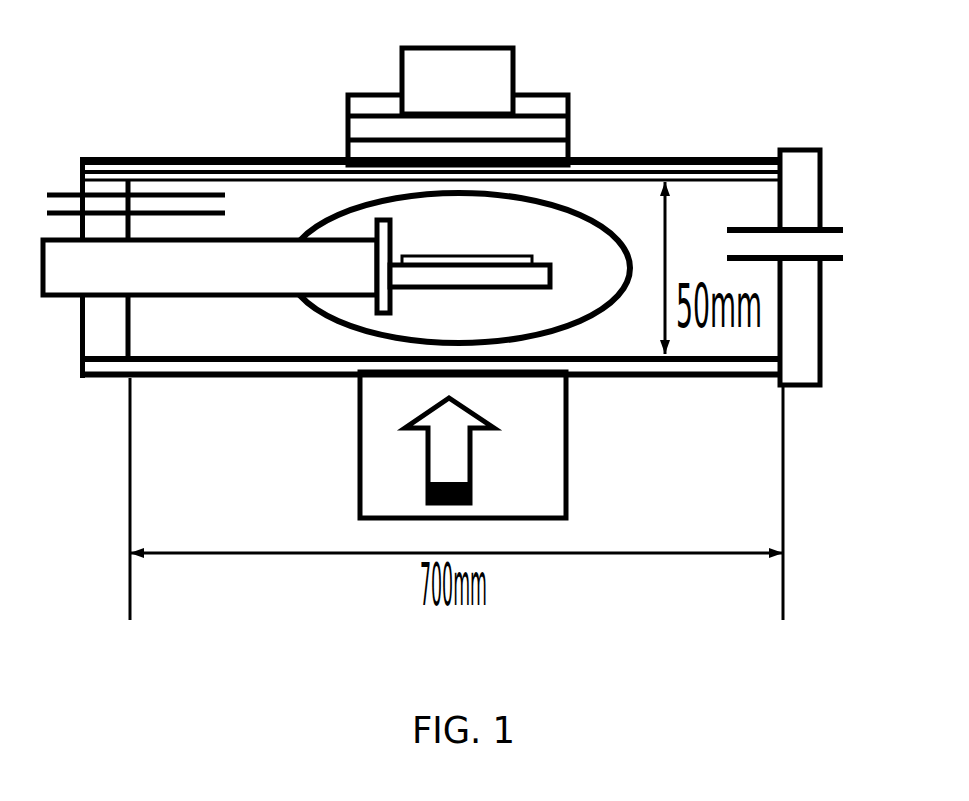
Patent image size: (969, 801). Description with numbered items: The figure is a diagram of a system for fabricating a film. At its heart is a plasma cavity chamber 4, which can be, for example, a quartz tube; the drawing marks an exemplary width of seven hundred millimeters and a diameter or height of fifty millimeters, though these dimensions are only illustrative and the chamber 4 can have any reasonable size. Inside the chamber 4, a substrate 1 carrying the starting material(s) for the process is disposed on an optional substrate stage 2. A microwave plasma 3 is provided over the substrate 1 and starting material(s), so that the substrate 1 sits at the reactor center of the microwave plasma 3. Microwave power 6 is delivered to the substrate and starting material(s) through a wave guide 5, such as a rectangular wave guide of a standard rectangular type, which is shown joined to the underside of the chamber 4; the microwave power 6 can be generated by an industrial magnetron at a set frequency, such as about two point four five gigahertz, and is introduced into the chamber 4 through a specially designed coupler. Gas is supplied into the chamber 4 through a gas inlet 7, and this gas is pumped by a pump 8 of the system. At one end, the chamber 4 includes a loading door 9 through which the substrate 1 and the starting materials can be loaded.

The substrate 1 is at (498, 258).
The substrate stage 2 is at (553, 267).
The microwave plasma 3 is at (540, 303).
The plasma cavity chamber 4 is at (232, 360).
The wave guide 5 is at (358, 474).
The microwave power 6 is at (473, 465).
The gas inlet 7 is at (834, 243).
The pump 8 is at (54, 196).
The loading door 9 is at (800, 175).